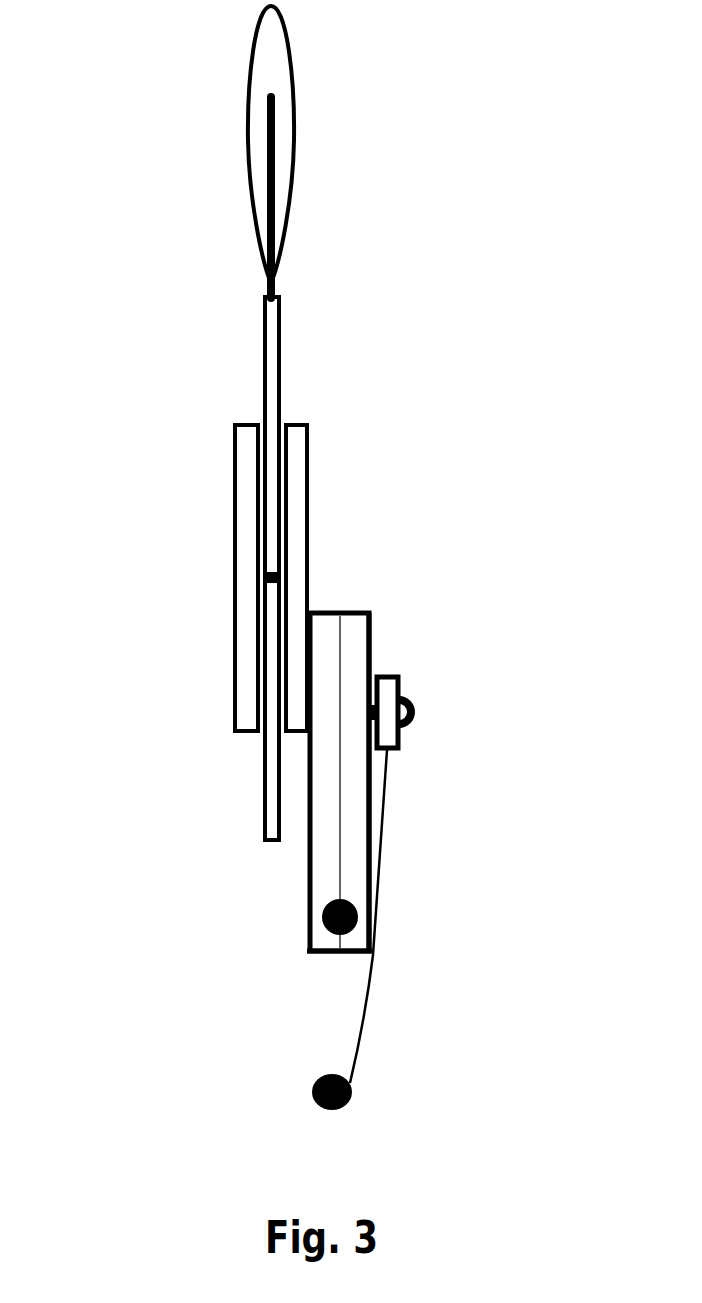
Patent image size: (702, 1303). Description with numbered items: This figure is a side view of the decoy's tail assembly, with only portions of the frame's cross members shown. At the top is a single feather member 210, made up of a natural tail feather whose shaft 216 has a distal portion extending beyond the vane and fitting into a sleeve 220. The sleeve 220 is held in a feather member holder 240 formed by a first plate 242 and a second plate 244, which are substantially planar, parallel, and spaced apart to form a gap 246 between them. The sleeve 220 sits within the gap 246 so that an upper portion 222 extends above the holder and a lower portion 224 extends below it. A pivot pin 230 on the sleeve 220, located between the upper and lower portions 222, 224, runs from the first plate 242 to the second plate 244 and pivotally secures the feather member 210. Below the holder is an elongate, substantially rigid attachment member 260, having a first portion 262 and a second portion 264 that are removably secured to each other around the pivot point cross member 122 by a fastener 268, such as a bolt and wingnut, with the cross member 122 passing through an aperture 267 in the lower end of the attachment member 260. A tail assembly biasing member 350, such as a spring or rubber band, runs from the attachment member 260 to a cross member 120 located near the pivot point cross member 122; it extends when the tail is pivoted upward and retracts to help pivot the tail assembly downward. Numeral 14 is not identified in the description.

The pendulum bob / marker 14 is at (255, 162).
The feather member 210 is at (313, 364).
The shaft 216 is at (262, 285).
The sleeve 220 is at (260, 377).
The upper portion of the sleeve 222 is at (273, 332).
The lower portion of the sleeve 224 is at (268, 785).
The pivot pin 230 is at (262, 578).
The feather member holder 240 is at (233, 424).
The first plate 242 is at (233, 500).
The second plate 244 is at (310, 518).
The gap 246 is at (285, 448).
The attachment member 260 is at (363, 612).
The first portion 262 is at (325, 862).
The second portion 264 is at (350, 645).
The aperture 267 is at (332, 930).
The fastener 268 is at (415, 708).
The pivot point cross member 122 is at (320, 917).
The tail assembly biasing member 350 is at (392, 823).
The cross member 120 is at (312, 1091).